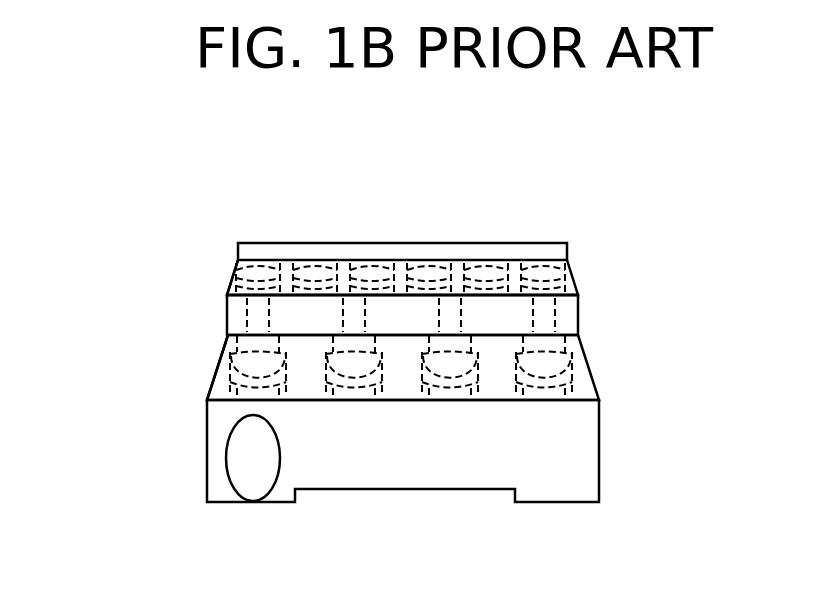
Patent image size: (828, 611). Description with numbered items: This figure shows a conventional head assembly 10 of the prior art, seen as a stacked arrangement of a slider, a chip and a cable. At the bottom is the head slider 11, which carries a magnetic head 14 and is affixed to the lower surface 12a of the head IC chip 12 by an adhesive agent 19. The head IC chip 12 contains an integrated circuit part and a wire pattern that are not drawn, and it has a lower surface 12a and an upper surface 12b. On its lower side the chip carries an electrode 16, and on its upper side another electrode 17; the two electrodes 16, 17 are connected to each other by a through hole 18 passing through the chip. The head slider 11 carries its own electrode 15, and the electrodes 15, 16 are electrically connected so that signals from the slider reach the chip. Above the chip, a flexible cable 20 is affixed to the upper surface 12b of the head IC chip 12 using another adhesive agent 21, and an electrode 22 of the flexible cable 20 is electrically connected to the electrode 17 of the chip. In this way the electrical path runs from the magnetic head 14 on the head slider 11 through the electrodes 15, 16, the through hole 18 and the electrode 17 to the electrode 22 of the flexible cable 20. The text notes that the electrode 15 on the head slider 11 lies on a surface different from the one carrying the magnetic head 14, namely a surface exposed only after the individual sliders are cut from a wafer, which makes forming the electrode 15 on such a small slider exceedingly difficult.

The head assembly 10 is at (437, 143).
The head slider 11 is at (585, 458).
The head IC chip 12 is at (580, 313).
The lower surface 12a is at (226, 345).
The upper surface 12b is at (233, 288).
The magnetic head 14 is at (257, 476).
The electrode 15 is at (567, 392).
The electrode 16 is at (567, 345).
The electrode 17 is at (565, 292).
The through hole 18 is at (237, 322).
The adhesive agent 19 is at (212, 385).
The flexible cable 20 is at (259, 250).
The adhesive agent 21 is at (233, 268).
The electrode 22 is at (542, 262).